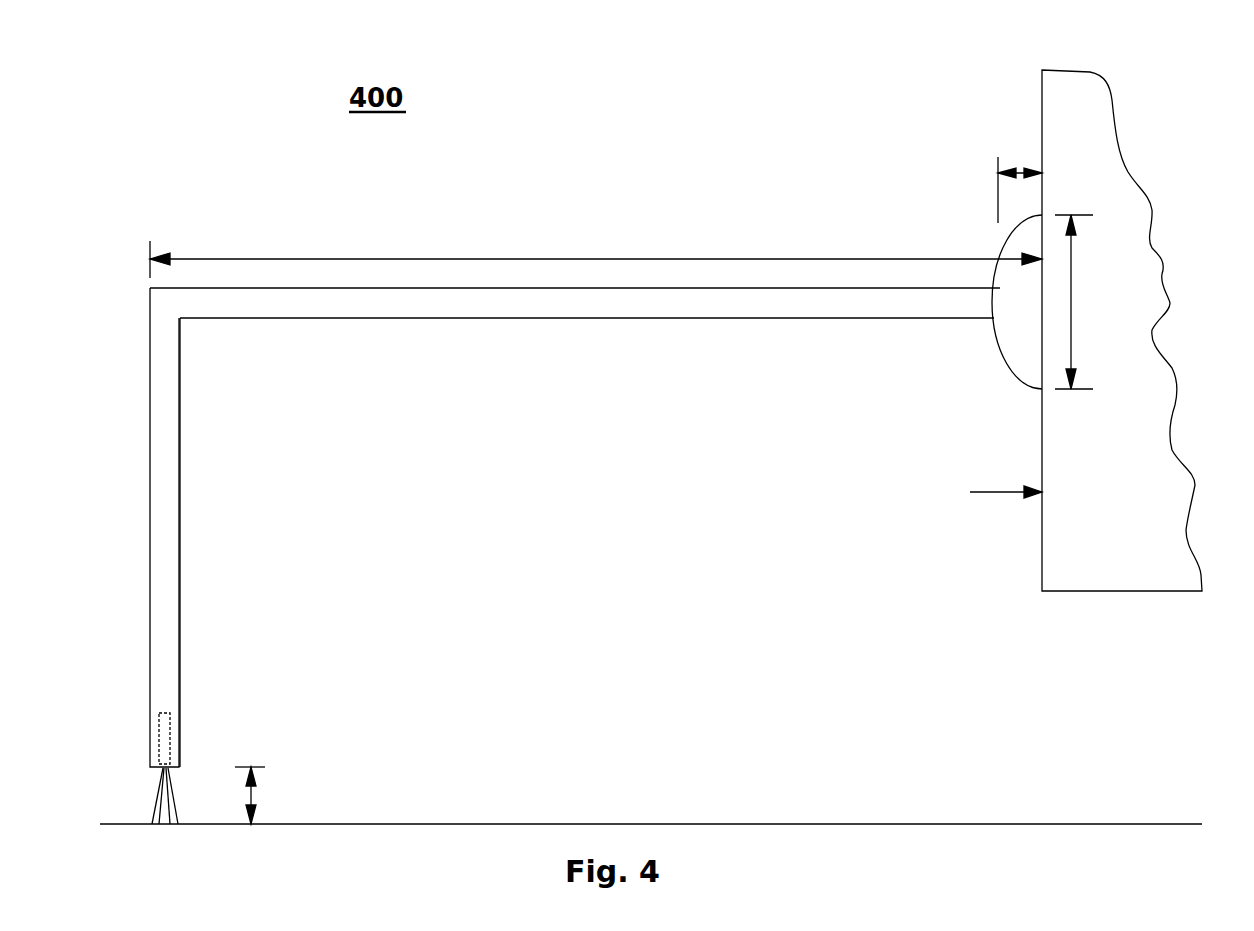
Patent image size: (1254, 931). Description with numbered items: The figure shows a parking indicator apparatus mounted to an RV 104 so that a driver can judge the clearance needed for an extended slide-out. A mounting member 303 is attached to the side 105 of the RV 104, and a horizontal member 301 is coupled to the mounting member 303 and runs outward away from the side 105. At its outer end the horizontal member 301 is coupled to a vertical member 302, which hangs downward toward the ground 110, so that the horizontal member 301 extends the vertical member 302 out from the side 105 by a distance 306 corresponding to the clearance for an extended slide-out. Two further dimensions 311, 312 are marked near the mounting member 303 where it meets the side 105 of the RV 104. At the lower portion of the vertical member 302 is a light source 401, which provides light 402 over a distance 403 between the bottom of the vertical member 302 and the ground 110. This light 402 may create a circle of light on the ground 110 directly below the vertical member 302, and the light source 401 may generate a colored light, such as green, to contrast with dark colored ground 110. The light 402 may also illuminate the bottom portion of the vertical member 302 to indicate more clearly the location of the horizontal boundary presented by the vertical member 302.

The RV 104 is at (1088, 128).
The side of RV 105 is at (989, 491).
The ground 110 is at (458, 824).
The horizontal member 301 is at (462, 303).
The vertical member 302 is at (168, 514).
The mounting member 303 is at (1016, 372).
The distance 306 is at (621, 262).
The standoff distance dimension 311 is at (1021, 158).
The nozzle height dimension 312 is at (1064, 312).
The light source 401 is at (159, 734).
The light 402 is at (164, 795).
The distance 403 is at (255, 790).